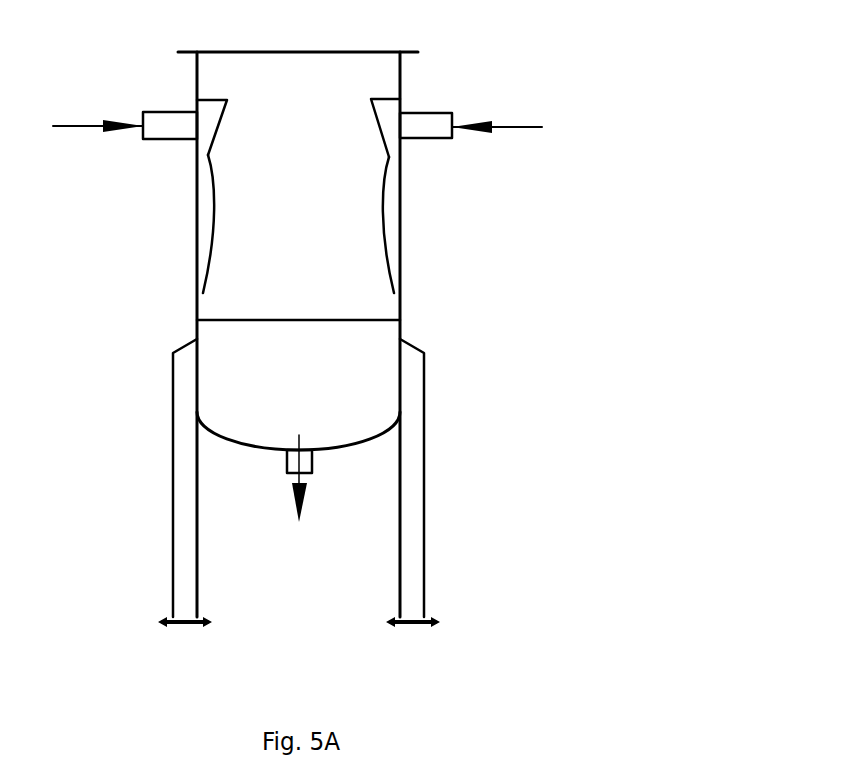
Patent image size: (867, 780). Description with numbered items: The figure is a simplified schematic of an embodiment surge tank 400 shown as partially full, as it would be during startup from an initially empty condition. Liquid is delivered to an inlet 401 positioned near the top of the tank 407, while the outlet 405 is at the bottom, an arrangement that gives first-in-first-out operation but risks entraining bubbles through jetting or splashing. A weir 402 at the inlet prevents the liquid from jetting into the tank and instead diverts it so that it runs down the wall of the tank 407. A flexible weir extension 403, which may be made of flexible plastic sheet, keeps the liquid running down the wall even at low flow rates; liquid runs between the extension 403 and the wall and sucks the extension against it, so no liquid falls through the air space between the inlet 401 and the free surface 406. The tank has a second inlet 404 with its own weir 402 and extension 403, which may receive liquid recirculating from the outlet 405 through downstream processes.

The surge tank 400 is at (602, 477).
The inlet 401 is at (453, 113).
The weir 402 is at (215, 126).
The flexible weir extension 403 is at (213, 211).
The inlet 404 is at (143, 112).
The outlet 405 is at (312, 473).
The free surface 406 is at (307, 320).
The tank 407 is at (400, 97).